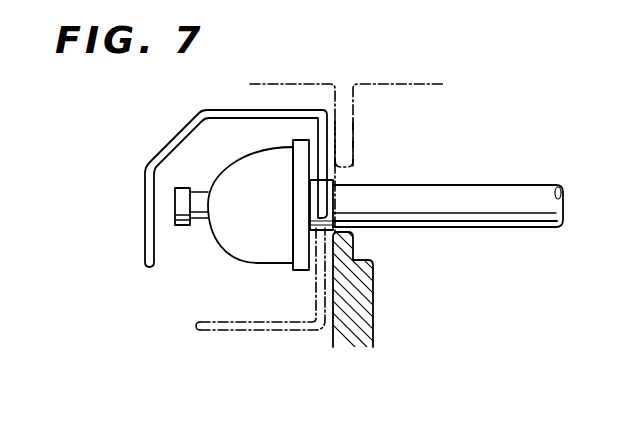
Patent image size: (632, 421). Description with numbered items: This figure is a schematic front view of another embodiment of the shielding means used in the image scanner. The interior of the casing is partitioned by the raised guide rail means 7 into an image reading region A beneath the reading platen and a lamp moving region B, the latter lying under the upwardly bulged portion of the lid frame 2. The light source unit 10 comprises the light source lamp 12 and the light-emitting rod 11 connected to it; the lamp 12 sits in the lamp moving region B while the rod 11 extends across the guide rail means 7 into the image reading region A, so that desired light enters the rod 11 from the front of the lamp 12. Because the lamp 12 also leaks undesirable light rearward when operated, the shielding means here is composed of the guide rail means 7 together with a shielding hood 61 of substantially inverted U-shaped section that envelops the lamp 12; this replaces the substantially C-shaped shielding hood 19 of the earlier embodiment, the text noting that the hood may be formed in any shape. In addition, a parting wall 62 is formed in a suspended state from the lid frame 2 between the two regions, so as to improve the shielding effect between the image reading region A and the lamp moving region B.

The lid frame 2 is at (296, 83).
The parting wall 62 is at (352, 123).
The shielding hood 61 is at (150, 175).
The shielding hood 19 is at (256, 322).
The light source unit 10 is at (482, 141).
The light source lamp 12 is at (273, 163).
The light-emitting rod 11 is at (443, 200).
The guide rail means 7 is at (350, 246).
The image reading region A is at (535, 355).
The lamp moving region B is at (352, 355).